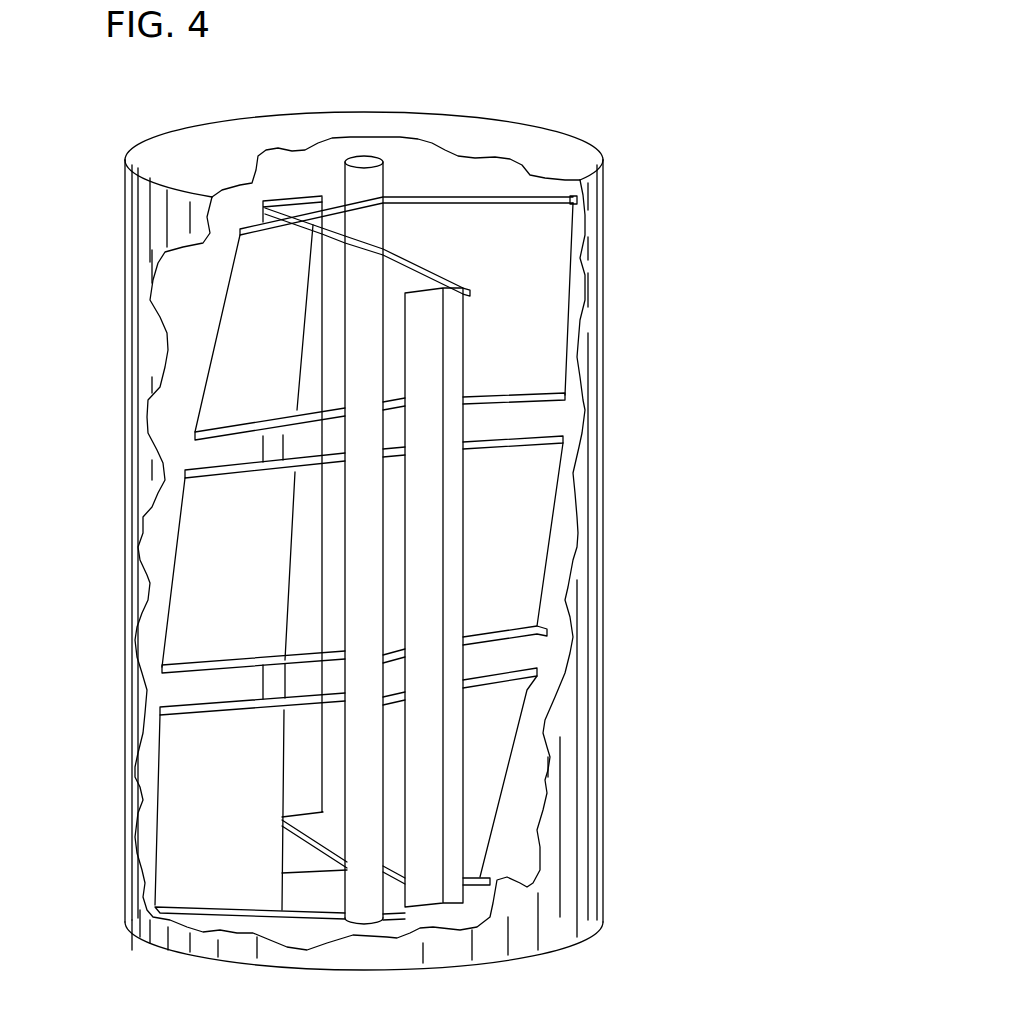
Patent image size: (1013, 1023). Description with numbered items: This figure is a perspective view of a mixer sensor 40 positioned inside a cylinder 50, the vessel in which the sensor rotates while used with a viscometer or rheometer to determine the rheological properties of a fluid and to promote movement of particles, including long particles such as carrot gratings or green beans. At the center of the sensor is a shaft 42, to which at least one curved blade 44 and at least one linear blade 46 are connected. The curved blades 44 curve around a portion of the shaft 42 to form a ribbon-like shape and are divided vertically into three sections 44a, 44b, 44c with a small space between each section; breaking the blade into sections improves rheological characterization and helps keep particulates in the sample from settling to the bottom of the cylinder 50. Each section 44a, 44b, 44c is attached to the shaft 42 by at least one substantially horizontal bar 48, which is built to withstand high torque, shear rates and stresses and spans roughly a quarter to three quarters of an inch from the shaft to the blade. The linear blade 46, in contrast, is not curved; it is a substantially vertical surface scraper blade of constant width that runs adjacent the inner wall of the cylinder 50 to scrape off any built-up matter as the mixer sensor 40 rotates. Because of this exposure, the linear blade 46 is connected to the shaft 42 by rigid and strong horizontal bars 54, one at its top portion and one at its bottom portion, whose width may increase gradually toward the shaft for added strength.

The mixer sensor 40 is at (616, 94).
The shaft 42 is at (373, 175).
The curved blade 44 is at (75, 245).
The first section of curved blade 44a is at (243, 307).
The second section of curved blade 44b is at (222, 578).
The third section of curved blade 44c is at (205, 817).
The linear blade 46 is at (430, 543).
The horizontal bar 48 is at (340, 197).
The cylinder 50 is at (583, 762).
The horizontal bar 54 is at (417, 263).